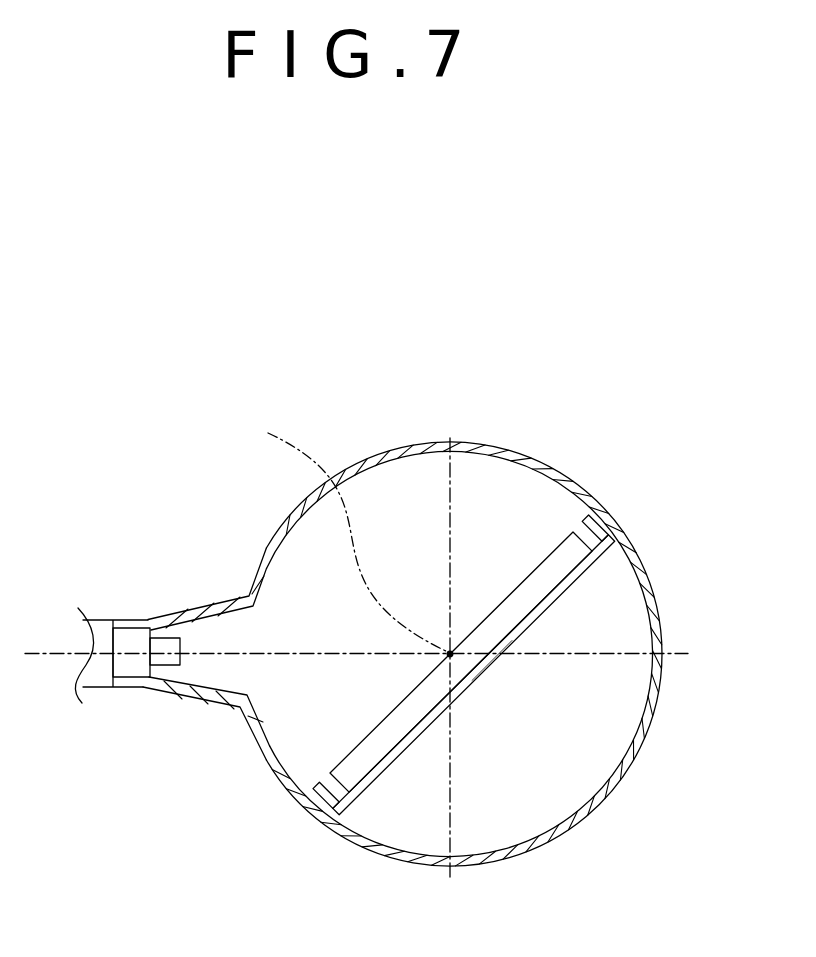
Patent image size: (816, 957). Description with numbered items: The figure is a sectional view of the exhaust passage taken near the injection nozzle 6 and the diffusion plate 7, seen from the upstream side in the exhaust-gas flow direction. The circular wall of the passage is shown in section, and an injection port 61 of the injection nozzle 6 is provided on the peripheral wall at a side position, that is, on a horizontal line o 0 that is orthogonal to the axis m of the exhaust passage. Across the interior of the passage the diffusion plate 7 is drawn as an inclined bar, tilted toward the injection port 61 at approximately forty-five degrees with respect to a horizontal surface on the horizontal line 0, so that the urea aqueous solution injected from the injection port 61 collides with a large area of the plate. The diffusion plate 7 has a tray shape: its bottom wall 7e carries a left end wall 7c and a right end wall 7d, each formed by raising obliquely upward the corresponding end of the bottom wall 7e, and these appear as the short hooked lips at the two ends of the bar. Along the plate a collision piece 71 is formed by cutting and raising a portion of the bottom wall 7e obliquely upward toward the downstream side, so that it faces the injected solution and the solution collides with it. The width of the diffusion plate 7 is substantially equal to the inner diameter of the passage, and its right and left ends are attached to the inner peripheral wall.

The diffusion plate 7 is at (530, 573).
The collision piece 71 is at (555, 548).
The left end wall 7c is at (603, 521).
The right end wall 7d is at (318, 813).
The bottom wall 7e is at (492, 664).
The injection nozzle 6 is at (128, 628).
The injection port 61 is at (182, 645).
The horizontal line 0 is at (628, 652).
The axis m is at (344, 532).